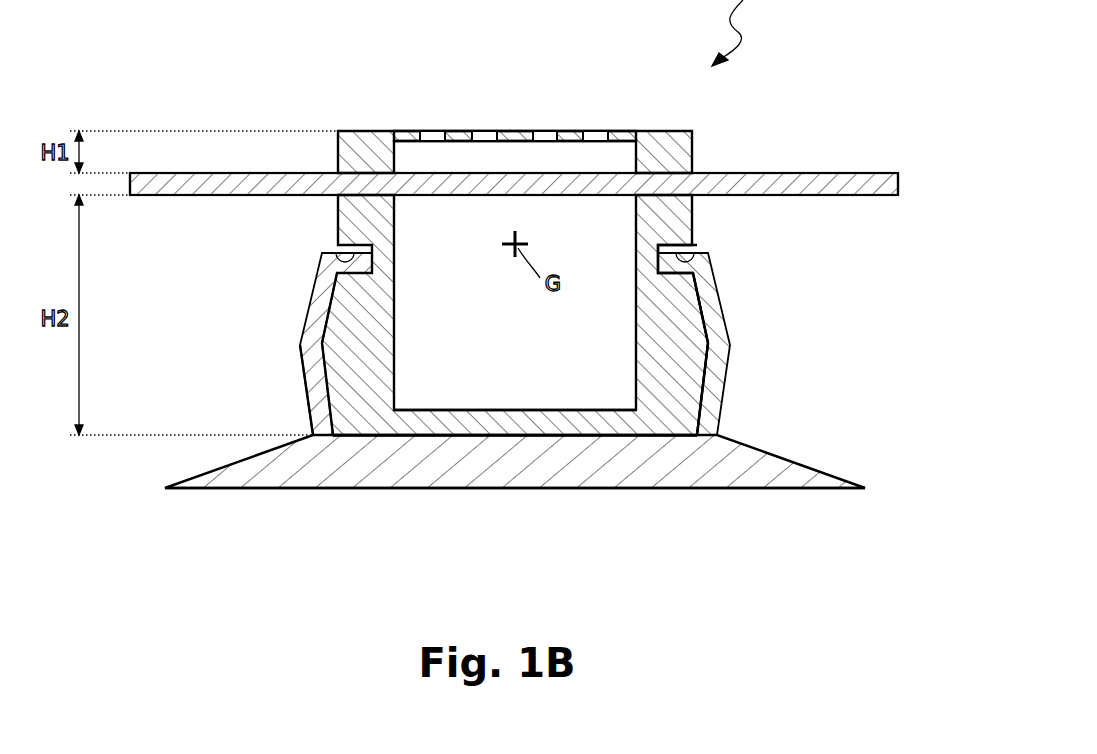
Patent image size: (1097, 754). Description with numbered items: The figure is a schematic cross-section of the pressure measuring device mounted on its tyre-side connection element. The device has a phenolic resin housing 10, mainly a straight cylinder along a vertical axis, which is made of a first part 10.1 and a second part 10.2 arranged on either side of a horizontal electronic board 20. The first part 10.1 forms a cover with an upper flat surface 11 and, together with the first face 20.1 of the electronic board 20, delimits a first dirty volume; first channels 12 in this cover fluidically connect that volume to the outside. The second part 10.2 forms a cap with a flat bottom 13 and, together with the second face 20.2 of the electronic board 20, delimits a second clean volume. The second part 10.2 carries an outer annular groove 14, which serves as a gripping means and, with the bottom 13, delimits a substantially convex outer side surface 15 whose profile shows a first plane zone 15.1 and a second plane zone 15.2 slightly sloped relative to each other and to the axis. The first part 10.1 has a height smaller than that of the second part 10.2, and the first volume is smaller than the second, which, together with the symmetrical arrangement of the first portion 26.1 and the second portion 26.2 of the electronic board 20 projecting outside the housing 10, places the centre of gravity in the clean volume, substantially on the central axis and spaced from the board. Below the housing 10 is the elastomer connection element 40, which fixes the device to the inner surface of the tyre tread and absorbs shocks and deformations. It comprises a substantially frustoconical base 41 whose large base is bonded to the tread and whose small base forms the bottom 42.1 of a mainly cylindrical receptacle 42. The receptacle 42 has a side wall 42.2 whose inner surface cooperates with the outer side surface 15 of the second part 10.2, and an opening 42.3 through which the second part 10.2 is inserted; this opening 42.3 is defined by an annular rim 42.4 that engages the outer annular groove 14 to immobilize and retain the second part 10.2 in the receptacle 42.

The housing 10 is at (558, 243).
The first part of the housing 10.1 is at (338, 152).
The second part of the housing 10.2 is at (338, 222).
The upper flat-shaped surface 11 is at (520, 131).
The first channels 12 is at (483, 131).
The bottom 13 is at (508, 410).
The outer annular groove 14 is at (708, 253).
The outer side surface 15 is at (780, 354).
The first plane zone 15.1 is at (692, 315).
The second plane zone 15.2 is at (754, 389).
The electronic board 20 is at (190, 173).
The first face of the electronic board 20.1 is at (790, 173).
The second face of the electronic board 20.2 is at (812, 195).
The first portion of the electronic board 26.1 is at (875, 195).
The second portion of the electronic board 26.2 is at (197, 195).
The connection element 40 is at (527, 532).
The base 41 is at (320, 480).
The receptacle 42 is at (478, 406).
The bottom of the receptacle 42.1 is at (435, 438).
The side wall 42.2 is at (300, 345).
The opening 42.3 is at (322, 256).
The annular rim 42.4 is at (335, 268).